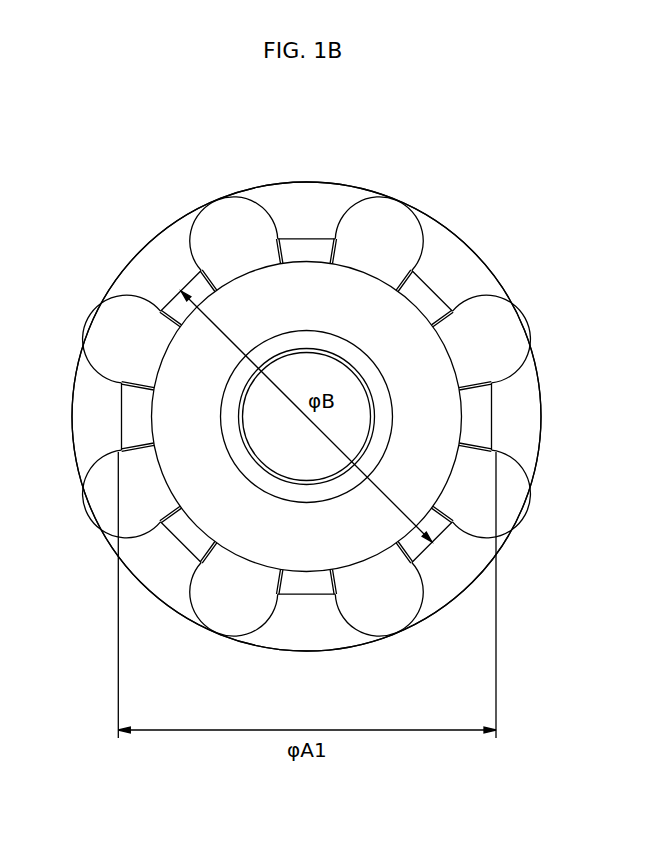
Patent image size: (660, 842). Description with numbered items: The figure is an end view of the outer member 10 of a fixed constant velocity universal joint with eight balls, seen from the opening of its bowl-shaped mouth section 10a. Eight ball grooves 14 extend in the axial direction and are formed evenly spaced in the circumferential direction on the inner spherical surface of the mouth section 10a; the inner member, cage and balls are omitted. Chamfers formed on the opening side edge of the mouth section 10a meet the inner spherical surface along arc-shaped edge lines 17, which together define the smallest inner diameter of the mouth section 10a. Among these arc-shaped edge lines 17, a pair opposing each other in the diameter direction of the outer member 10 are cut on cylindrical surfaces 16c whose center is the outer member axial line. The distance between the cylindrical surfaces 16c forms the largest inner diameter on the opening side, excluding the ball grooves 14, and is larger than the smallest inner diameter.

The outer member 10 is at (200, 173).
The mouth section 10a is at (403, 202).
The ball grooves 14 is at (132, 340).
The cylindrical surfaces 16c is at (118, 405).
The arc-shaped edge lines 17 is at (198, 268).